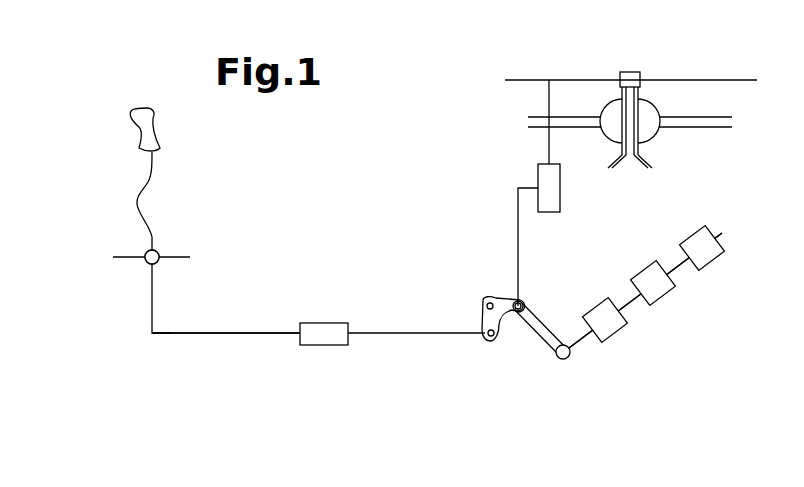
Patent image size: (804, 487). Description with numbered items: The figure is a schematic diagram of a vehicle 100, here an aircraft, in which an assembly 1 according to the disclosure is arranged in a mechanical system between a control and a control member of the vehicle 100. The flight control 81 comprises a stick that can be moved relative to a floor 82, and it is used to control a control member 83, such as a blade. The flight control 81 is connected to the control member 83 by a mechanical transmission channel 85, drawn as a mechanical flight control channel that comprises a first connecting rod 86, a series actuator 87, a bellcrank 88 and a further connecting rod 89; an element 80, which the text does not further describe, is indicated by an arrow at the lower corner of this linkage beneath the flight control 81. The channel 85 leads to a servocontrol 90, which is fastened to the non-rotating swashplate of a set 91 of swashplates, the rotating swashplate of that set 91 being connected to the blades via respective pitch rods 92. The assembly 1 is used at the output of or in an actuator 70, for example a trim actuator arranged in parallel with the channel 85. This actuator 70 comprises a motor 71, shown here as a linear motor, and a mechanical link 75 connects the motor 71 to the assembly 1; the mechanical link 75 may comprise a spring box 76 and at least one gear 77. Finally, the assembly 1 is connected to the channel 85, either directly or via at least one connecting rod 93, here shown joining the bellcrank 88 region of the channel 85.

The assembly 1 is at (542, 380).
The actuator 70 is at (656, 386).
The motor 71 is at (722, 234).
The mechanical link 75 is at (714, 292).
The spring box 76 is at (664, 304).
The gear 77 is at (620, 342).
The actuating linkage 80 is at (140, 350).
The flight control 81 is at (152, 162).
The floor 82 is at (125, 256).
The control member 83 is at (607, 42).
The mechanical transmission channel 85 is at (112, 292).
The connecting rod 86 is at (190, 332).
The series actuator 87 is at (317, 323).
The bellcrank 88 is at (478, 280).
The connecting rod 89 is at (518, 247).
The servocontrol 90 is at (560, 188).
The set of swashplates 91 is at (504, 126).
The pitch rod 92 is at (549, 100).
The connecting rod 93 is at (526, 336).
The vehicle 100 is at (178, 396).